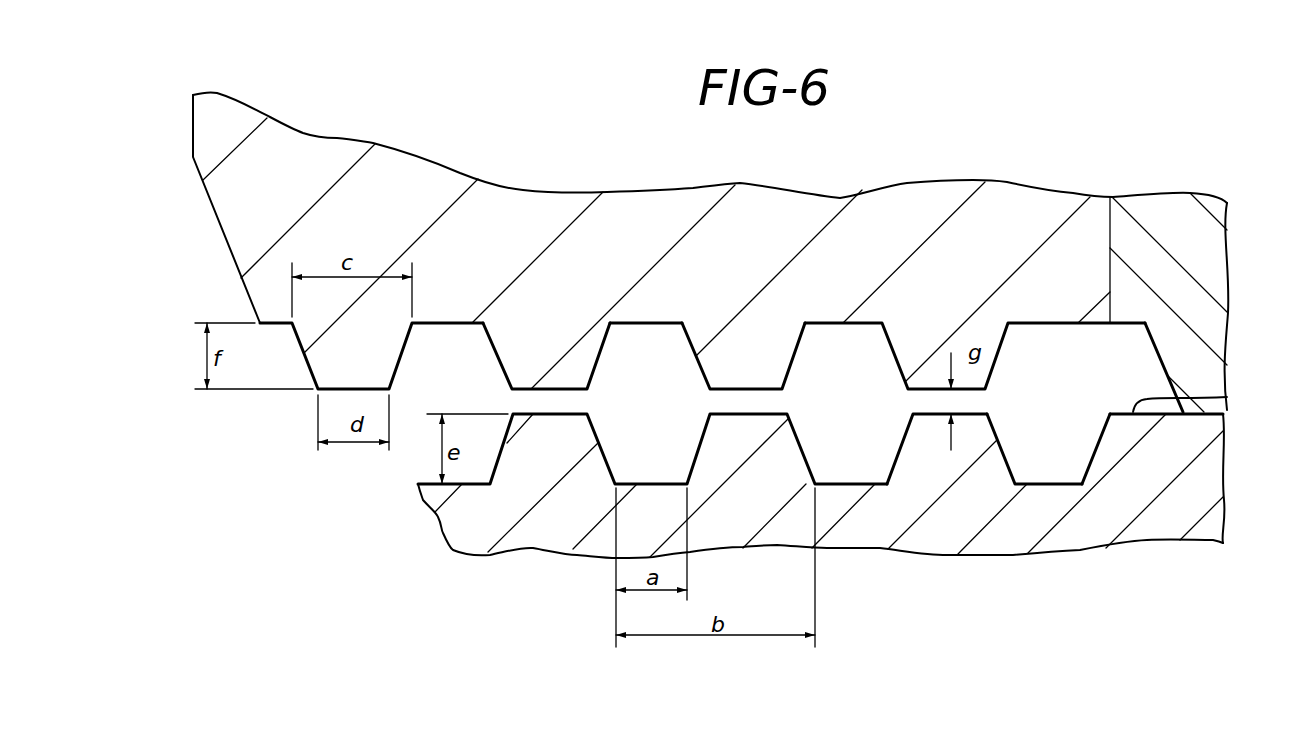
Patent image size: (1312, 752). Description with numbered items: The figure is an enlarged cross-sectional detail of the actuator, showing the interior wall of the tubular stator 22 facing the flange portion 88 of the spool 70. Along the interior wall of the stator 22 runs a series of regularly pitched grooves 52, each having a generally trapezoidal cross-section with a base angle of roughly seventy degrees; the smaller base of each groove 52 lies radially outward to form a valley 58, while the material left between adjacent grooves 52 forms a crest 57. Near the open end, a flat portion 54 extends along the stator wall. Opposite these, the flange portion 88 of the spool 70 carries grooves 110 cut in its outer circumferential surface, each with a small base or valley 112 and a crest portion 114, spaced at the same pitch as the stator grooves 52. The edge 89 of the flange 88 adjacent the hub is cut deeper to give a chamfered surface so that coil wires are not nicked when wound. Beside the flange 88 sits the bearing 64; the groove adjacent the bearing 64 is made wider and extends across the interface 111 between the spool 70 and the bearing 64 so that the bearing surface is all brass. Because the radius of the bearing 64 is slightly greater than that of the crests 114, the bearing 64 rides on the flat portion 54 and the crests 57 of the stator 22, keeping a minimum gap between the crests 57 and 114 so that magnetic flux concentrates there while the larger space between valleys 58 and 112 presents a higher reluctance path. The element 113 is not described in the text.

The tubular stator 22 is at (1152, 520).
The groove 52 is at (1050, 456).
The flat portion 54 is at (1227, 398).
The crest 57 is at (917, 430).
The valley 58 is at (1063, 468).
The bearing 64 is at (1208, 236).
The spool 70 is at (629, 240).
The flange portion 88 is at (762, 202).
The edge 89 is at (220, 247).
The groove 110 is at (626, 352).
The interface 111 is at (1112, 229).
The valley 112 is at (657, 338).
The inclined end surface 113 is at (1122, 363).
The crest 114 is at (752, 395).